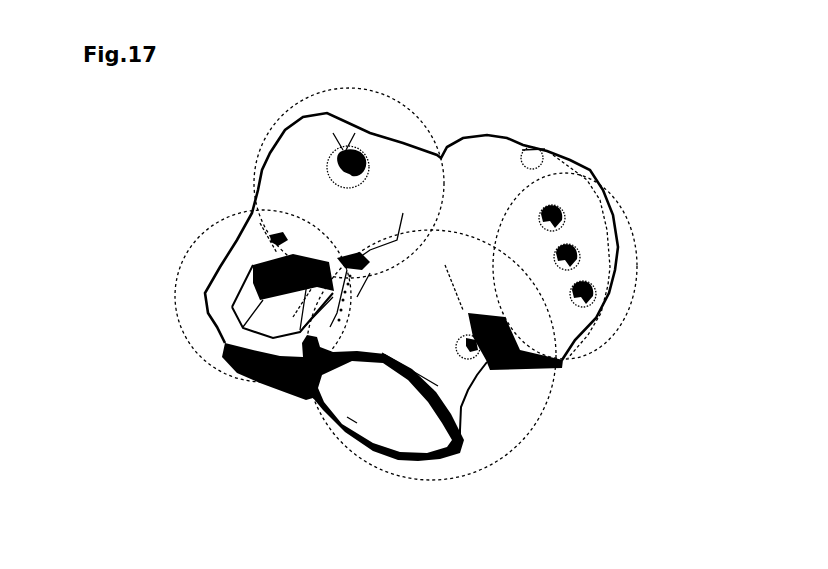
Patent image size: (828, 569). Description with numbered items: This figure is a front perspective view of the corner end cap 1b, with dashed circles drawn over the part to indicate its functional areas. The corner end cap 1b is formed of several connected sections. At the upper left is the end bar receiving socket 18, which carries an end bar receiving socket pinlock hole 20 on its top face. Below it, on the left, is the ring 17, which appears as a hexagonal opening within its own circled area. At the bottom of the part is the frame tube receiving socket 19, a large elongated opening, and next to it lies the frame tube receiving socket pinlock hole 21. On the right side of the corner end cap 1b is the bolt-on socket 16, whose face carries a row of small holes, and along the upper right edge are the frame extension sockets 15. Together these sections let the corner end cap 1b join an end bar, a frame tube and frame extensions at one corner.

The corner end cap 1b is at (203, 173).
The frame extension sockets 15 is at (627, 262).
The bolt-on socket 16 is at (619, 317).
The ring 17 is at (190, 344).
The end bar receiving socket 18 is at (265, 134).
The frame tube receiving socket 19 is at (353, 462).
The end bar receiving socket pinlock hole 20 is at (343, 152).
The frame tube receiving socket pinlock hole 21 is at (478, 357).